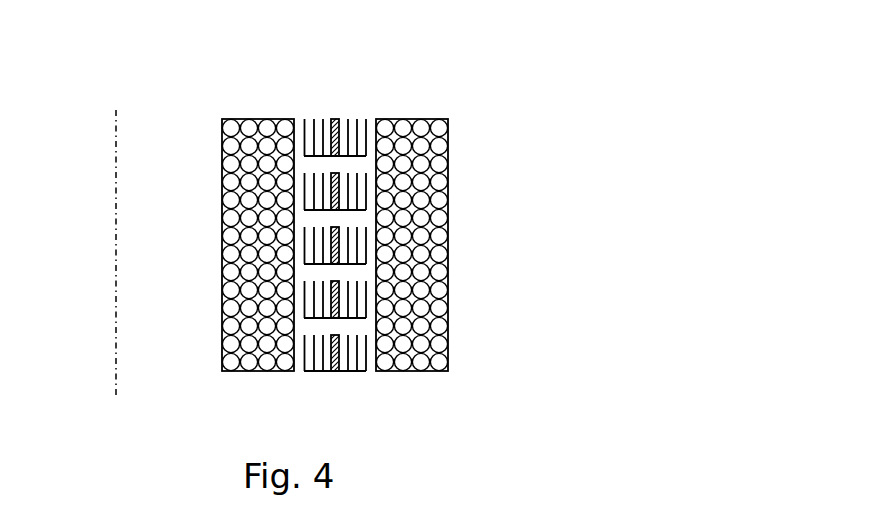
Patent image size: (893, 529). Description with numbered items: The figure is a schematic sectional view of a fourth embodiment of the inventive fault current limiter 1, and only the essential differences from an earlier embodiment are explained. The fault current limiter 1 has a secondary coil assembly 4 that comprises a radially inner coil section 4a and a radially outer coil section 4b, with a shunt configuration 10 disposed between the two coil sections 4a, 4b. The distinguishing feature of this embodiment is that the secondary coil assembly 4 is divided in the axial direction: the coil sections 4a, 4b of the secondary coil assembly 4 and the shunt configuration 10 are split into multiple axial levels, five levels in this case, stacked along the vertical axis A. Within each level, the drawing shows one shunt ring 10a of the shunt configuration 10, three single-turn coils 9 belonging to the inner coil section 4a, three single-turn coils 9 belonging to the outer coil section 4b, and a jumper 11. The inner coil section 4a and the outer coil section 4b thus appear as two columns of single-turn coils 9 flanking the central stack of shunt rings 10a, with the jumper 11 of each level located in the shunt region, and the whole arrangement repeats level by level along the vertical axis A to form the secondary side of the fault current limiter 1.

The fault current limiter 1 is at (480, 97).
The secondary coil assembly 4 is at (311, 300).
The inner coil section 4a is at (309, 98).
The outer coil section 4b is at (359, 99).
The single-turn coil 9 is at (310, 188).
The shunt configuration 10 is at (332, 97).
The shunt ring 10a is at (330, 182).
The jumper 11 is at (355, 211).
The vertical axis A is at (115, 163).